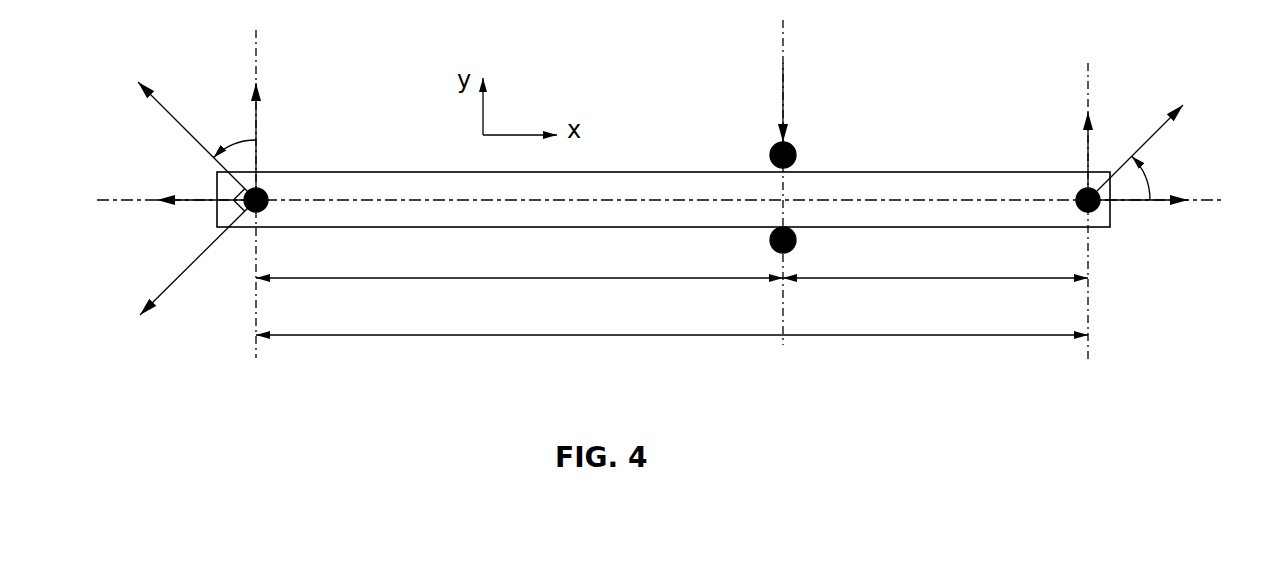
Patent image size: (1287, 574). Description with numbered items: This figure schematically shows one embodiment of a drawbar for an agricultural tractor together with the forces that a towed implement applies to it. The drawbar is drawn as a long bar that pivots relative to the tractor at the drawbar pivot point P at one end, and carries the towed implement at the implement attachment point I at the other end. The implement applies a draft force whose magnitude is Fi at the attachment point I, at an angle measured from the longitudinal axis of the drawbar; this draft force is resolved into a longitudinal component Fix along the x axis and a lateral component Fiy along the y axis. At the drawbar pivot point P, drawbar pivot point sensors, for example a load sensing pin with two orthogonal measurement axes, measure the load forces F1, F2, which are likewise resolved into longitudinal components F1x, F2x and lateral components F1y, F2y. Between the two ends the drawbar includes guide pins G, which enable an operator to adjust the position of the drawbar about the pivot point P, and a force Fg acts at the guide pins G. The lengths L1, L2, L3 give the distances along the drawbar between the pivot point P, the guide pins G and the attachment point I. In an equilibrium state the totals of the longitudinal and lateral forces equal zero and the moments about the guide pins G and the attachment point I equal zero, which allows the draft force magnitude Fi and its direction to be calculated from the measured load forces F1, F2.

The drawbar pivot point P is at (267, 188).
The guide pins G is at (802, 215).
The implement attachment point I is at (1072, 192).
The load force F1 is at (180, 125).
The load force F2 is at (181, 273).
The longitudinal component of load force F1 F1x is at (176, 178).
The longitudinal component of load force F2 F2x is at (167, 172).
The lateral component of load force F1 F1y is at (284, 138).
The lateral component of load force F2 F2y is at (338, 93).
The guide pin force Fg is at (799, 100).
The draft force magnitude Fi is at (1164, 140).
The longitudinal component of draft force Fix is at (1153, 225).
The lateral component of draft force Fiy is at (1109, 140).
The drawbar length L1 is at (672, 314).
The drawbar length L2 is at (935, 256).
The drawbar length L3 is at (519, 258).